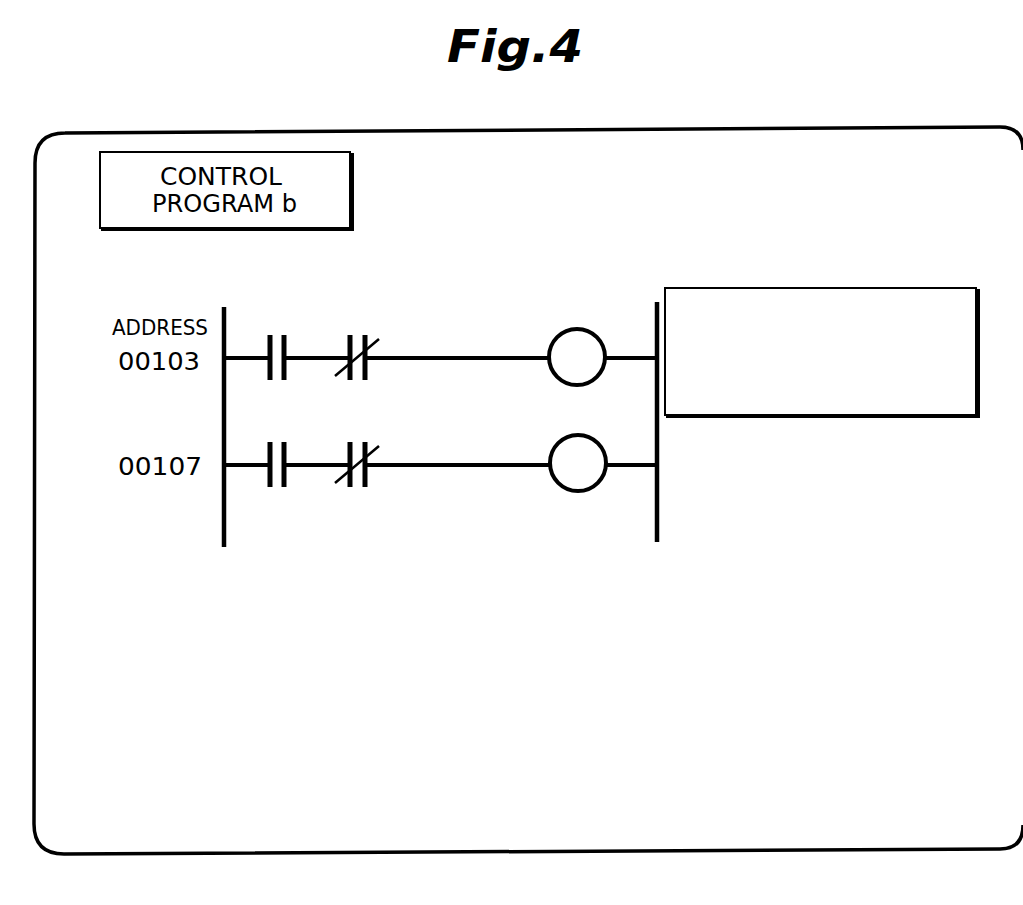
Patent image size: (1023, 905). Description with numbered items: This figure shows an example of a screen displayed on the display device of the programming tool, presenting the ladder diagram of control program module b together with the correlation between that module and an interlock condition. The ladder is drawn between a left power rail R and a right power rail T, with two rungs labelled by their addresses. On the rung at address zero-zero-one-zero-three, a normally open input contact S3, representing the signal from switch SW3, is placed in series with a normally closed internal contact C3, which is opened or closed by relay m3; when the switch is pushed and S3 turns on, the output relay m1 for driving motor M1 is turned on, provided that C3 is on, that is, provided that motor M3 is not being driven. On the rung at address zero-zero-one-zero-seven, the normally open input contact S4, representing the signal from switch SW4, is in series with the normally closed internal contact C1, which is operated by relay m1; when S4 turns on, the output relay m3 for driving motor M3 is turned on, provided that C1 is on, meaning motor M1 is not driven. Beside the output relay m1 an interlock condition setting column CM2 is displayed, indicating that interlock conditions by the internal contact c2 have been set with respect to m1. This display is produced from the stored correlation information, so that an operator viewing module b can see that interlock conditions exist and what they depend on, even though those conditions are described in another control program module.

The interlock condition setting column CM2 is at (852, 288).
The input contact S3 is at (276, 341).
The internal contact C3 is at (357, 341).
The input contact S4 is at (276, 448).
The internal contact C1 is at (357, 448).
The output relay m1 is at (577, 357).
The output relay m3 is at (578, 463).
The left power rail R is at (221, 406).
The right power rail T is at (656, 402).